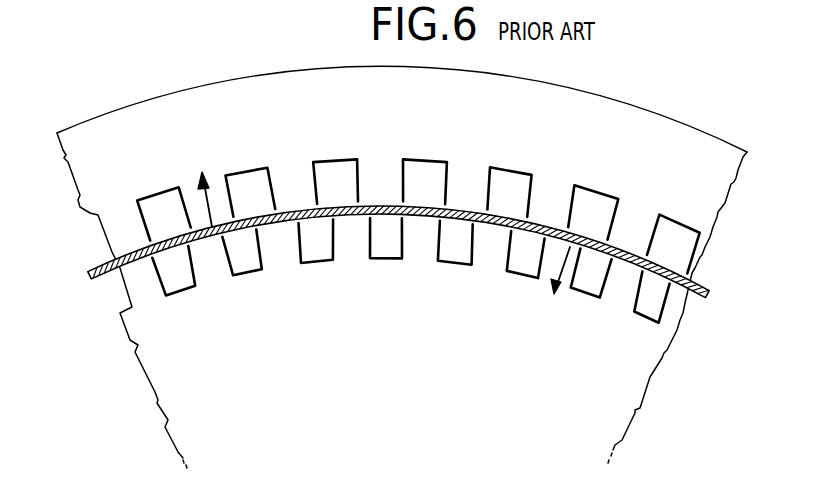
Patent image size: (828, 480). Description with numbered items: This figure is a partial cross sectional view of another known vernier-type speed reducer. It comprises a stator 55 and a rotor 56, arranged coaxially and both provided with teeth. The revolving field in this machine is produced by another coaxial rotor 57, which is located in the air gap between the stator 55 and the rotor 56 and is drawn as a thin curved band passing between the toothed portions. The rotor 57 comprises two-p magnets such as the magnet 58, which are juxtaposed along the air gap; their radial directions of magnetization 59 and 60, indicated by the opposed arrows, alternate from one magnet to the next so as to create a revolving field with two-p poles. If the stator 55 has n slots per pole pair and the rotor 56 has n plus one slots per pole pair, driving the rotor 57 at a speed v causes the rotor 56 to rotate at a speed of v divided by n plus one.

The stator 55 is at (625, 129).
The rotor 56 is at (610, 362).
The coaxial rotor 57 is at (328, 214).
The magnet 58 is at (465, 218).
The radial direction of magnetization 59 is at (206, 195).
The radial direction of magnetization 60 is at (565, 257).